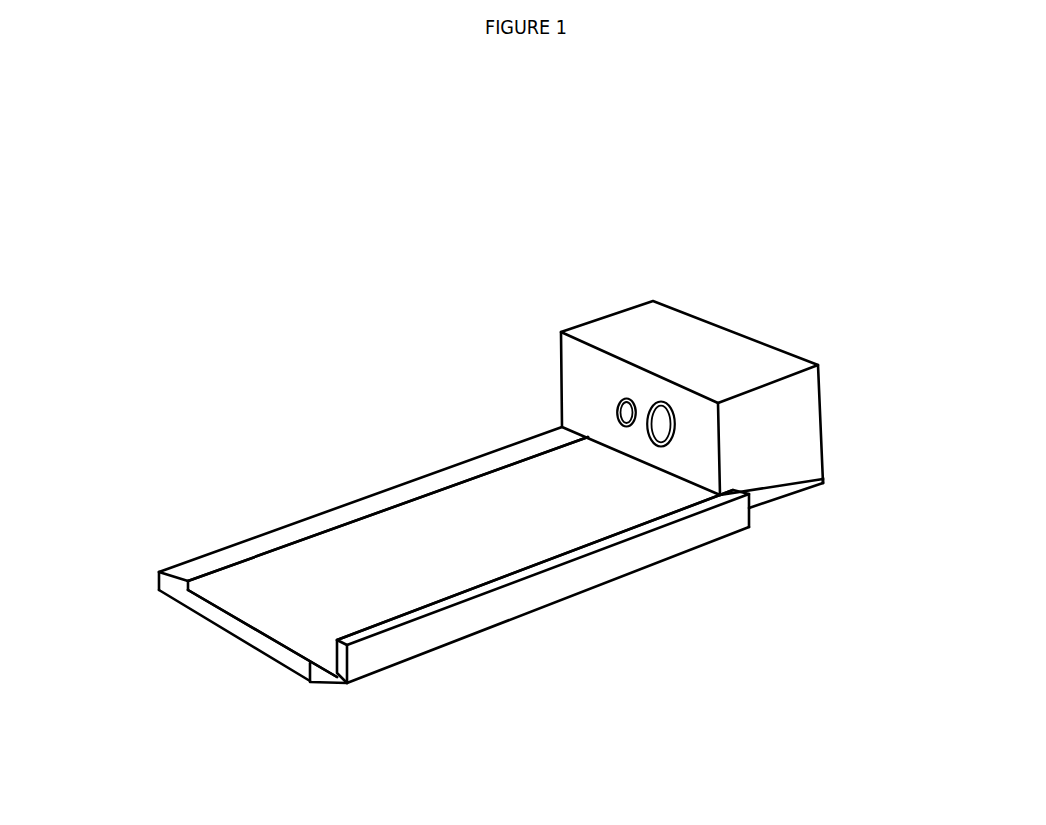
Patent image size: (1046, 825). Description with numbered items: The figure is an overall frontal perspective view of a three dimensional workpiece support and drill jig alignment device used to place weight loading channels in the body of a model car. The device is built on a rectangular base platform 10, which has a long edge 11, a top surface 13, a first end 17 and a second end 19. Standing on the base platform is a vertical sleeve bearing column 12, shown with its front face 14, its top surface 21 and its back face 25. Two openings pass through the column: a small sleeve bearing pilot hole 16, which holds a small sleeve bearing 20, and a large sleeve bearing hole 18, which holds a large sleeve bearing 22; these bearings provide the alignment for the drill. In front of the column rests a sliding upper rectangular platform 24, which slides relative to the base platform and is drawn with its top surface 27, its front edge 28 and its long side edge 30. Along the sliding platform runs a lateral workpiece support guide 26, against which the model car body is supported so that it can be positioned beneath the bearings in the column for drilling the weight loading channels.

The rectangular base platform 10 is at (416, 487).
The long edge 11 is at (778, 493).
The vertical sleeve bearing column 12 is at (688, 335).
The top surface 13 is at (238, 553).
The front face 14 is at (588, 389).
The small sleeve bearing pilot hole 16 is at (623, 401).
The first end 17 is at (800, 476).
The large sleeve bearing hole 18 is at (668, 400).
The second end 19 is at (191, 567).
The small sleeve bearing 20 is at (627, 401).
The top surface 21 is at (275, 650).
The large sleeve bearing 22 is at (662, 420).
The sliding upper rectangular platform 24 is at (393, 543).
The back face 25 is at (313, 672).
The lateral workpiece support guide 26 is at (565, 579).
The top surface 27 is at (268, 598).
The front edge 28 is at (683, 482).
The long side edge 30 is at (493, 622).